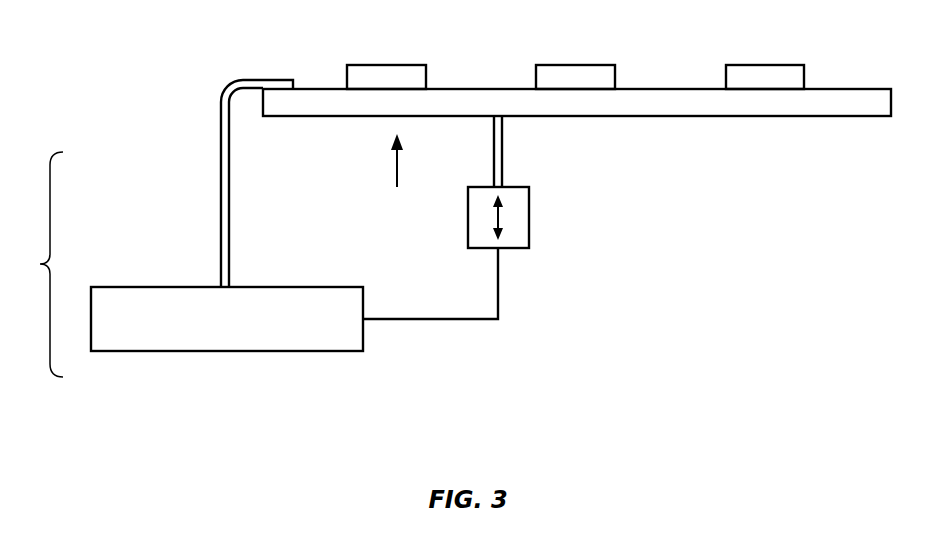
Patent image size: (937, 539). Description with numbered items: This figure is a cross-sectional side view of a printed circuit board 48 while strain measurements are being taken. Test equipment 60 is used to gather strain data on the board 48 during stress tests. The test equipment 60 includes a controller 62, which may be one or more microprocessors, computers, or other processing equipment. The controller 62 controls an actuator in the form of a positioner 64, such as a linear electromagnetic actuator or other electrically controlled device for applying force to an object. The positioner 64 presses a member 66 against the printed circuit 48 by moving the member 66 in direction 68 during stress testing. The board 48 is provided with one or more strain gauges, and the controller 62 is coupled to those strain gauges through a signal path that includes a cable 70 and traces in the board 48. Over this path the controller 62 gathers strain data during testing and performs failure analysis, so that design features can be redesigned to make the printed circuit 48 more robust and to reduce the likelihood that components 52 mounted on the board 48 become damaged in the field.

The printed circuit board 48 is at (755, 110).
The components 52 is at (385, 89).
The test equipment 60 is at (36, 264).
The controller 62 is at (295, 352).
The positioner 64 is at (530, 215).
The member 66 is at (504, 143).
The direction 68 is at (397, 160).
The cable 70 is at (221, 162).